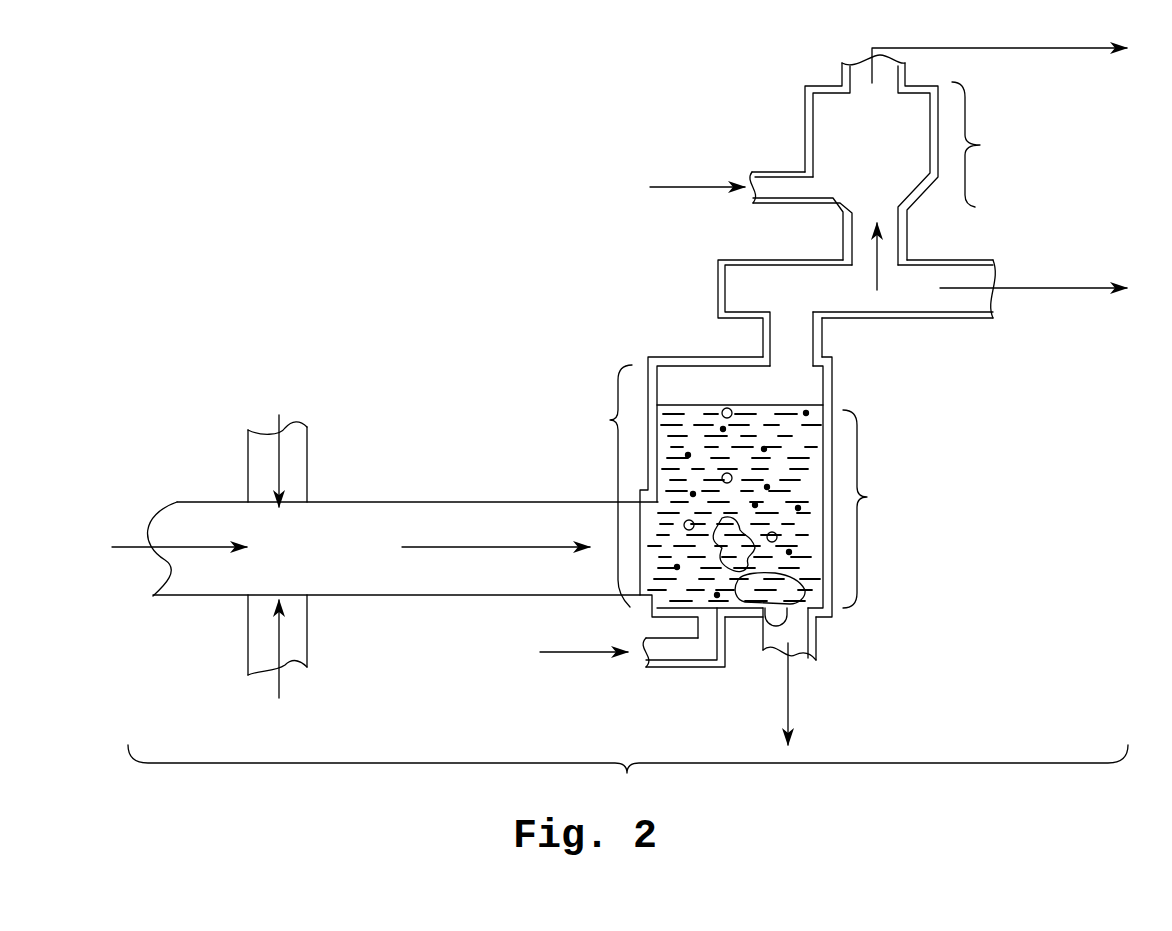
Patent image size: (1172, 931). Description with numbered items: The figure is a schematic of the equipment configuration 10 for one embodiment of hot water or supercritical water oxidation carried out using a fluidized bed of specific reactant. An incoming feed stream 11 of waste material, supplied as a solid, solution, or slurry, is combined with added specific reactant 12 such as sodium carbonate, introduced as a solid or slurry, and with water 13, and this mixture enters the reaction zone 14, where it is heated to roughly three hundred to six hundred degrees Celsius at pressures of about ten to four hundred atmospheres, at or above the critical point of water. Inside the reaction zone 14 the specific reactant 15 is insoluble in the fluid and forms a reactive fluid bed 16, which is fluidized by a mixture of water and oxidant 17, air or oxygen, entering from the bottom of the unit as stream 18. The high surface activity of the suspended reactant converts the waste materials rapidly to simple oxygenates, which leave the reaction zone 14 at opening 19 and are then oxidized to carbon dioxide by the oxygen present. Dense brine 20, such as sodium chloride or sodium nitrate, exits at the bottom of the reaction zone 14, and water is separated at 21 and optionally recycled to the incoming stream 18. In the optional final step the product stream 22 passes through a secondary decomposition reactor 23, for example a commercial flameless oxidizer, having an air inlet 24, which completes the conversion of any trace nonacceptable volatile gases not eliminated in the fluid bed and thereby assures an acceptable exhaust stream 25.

The equipment configuration 10 is at (628, 774).
The incoming feed stream 11 is at (190, 545).
The specific reactant 12 is at (277, 470).
The water 13 is at (277, 652).
The reaction zone 14 is at (699, 497).
The specific reactant 15 is at (800, 510).
The reactive fluid bed 16 is at (774, 506).
The oxidant 17 is at (732, 413).
The stream 18 is at (570, 652).
The opening 19 is at (790, 352).
The dense brine 20 is at (785, 607).
The water separation 21 is at (788, 683).
The product stream 22 is at (878, 272).
The secondary decomposition reactor 23 is at (882, 160).
The air inlet 24 is at (742, 178).
The exhaust stream 25 is at (1042, 48).